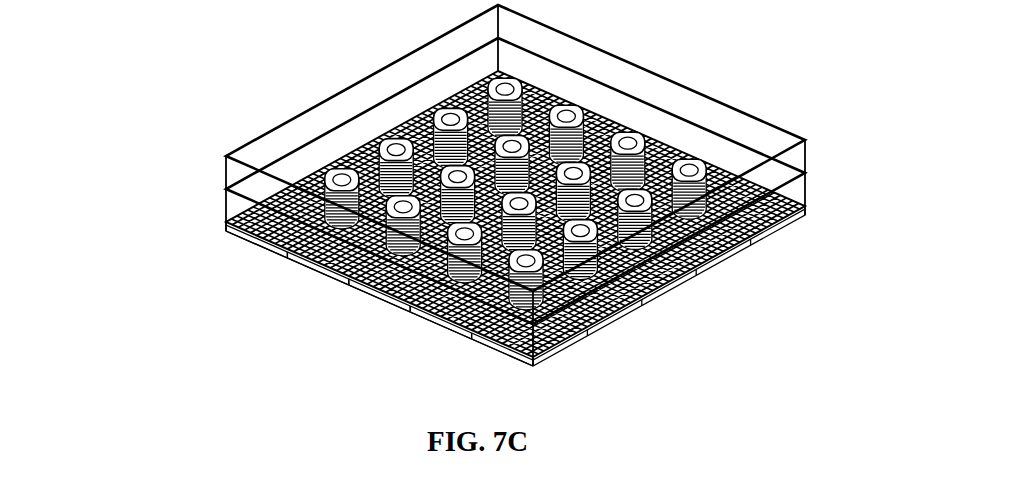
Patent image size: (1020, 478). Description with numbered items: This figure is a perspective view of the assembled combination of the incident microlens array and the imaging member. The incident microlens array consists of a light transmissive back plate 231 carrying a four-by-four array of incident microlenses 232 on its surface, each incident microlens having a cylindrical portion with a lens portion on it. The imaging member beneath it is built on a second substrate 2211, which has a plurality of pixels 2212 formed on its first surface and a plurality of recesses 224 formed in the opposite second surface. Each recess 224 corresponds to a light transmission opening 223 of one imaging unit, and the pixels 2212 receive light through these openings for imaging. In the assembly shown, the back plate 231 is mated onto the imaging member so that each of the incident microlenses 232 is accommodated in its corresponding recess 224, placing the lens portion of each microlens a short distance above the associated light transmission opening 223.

The light transmissive back plate 231 is at (732, 103).
The recesses 224 is at (705, 156).
The incident microlenses 232 is at (777, 192).
The light transmission opening 223 is at (717, 267).
The second substrate 2211 is at (226, 154).
The pixels 2212 is at (350, 287).